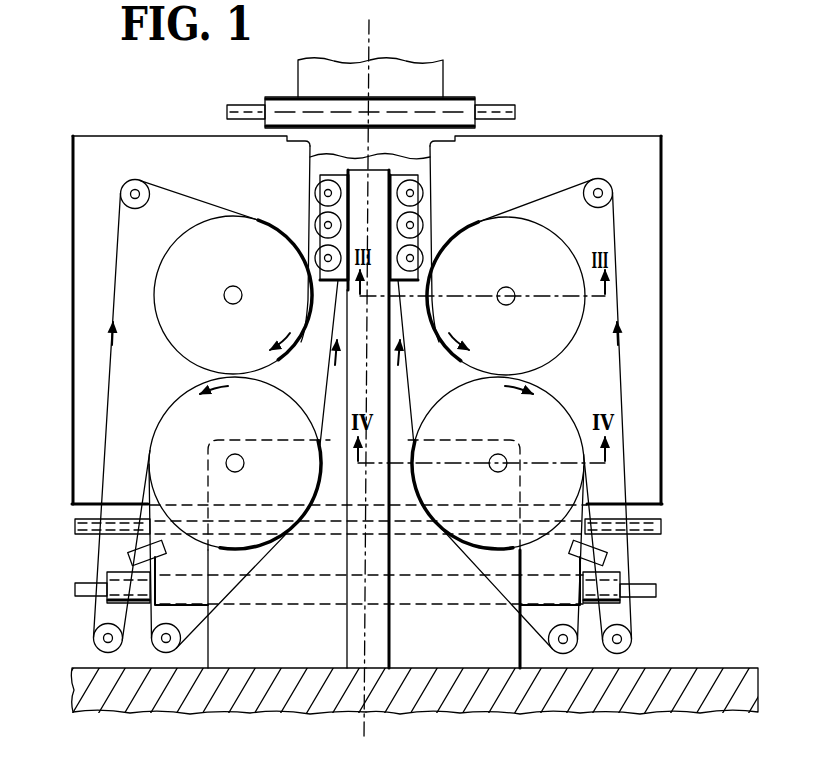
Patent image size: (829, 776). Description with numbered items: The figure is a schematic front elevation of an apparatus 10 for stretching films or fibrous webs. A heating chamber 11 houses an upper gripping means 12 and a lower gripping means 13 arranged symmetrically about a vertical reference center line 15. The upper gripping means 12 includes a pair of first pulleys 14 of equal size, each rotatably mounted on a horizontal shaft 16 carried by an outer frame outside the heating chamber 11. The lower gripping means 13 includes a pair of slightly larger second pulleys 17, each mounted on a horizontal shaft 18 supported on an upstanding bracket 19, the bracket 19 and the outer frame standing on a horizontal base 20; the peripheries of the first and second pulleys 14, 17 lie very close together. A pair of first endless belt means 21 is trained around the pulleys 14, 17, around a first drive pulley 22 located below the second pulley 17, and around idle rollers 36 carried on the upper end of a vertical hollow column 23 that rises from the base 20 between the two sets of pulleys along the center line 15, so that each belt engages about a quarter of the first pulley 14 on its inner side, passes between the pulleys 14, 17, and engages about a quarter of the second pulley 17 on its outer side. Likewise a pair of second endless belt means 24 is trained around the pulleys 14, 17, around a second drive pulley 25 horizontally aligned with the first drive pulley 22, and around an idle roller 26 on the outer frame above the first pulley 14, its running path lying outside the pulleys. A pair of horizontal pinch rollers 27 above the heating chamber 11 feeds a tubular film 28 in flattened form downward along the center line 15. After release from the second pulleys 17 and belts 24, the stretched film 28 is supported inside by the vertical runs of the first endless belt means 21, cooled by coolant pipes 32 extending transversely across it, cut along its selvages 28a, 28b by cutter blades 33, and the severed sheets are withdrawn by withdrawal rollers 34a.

The apparatus 10 is at (573, 100).
The heating chamber 11 is at (655, 264).
The upper gripping means 12 is at (214, 192).
The lower gripping means 13 is at (140, 442).
The first pulley 14 is at (177, 272).
The vertical reference center line 15 is at (364, 52).
The horizontal shaft 16 is at (238, 288).
The second pulley 17 is at (178, 405).
The horizontal shaft 18 is at (237, 455).
The upstanding bracket 19 is at (466, 700).
The horizontal base 20 is at (245, 695).
The first endless belt means 21 is at (326, 393).
The first drive pulley 22 is at (165, 653).
The vertical hollow column 23 is at (380, 639).
The second endless belt means 24 is at (102, 295).
The second drive pulley 25 is at (105, 652).
The idle roller 26 is at (122, 190).
The pinch roller 27 is at (455, 107).
The tubular film 28 is at (398, 75).
The selvage 28a is at (433, 162).
The selvage 28b is at (312, 167).
The coolant pipe 32 is at (650, 520).
The cutter blade 33 is at (125, 553).
The withdrawal roller 34a is at (622, 600).
The idle roller 36 is at (313, 258).